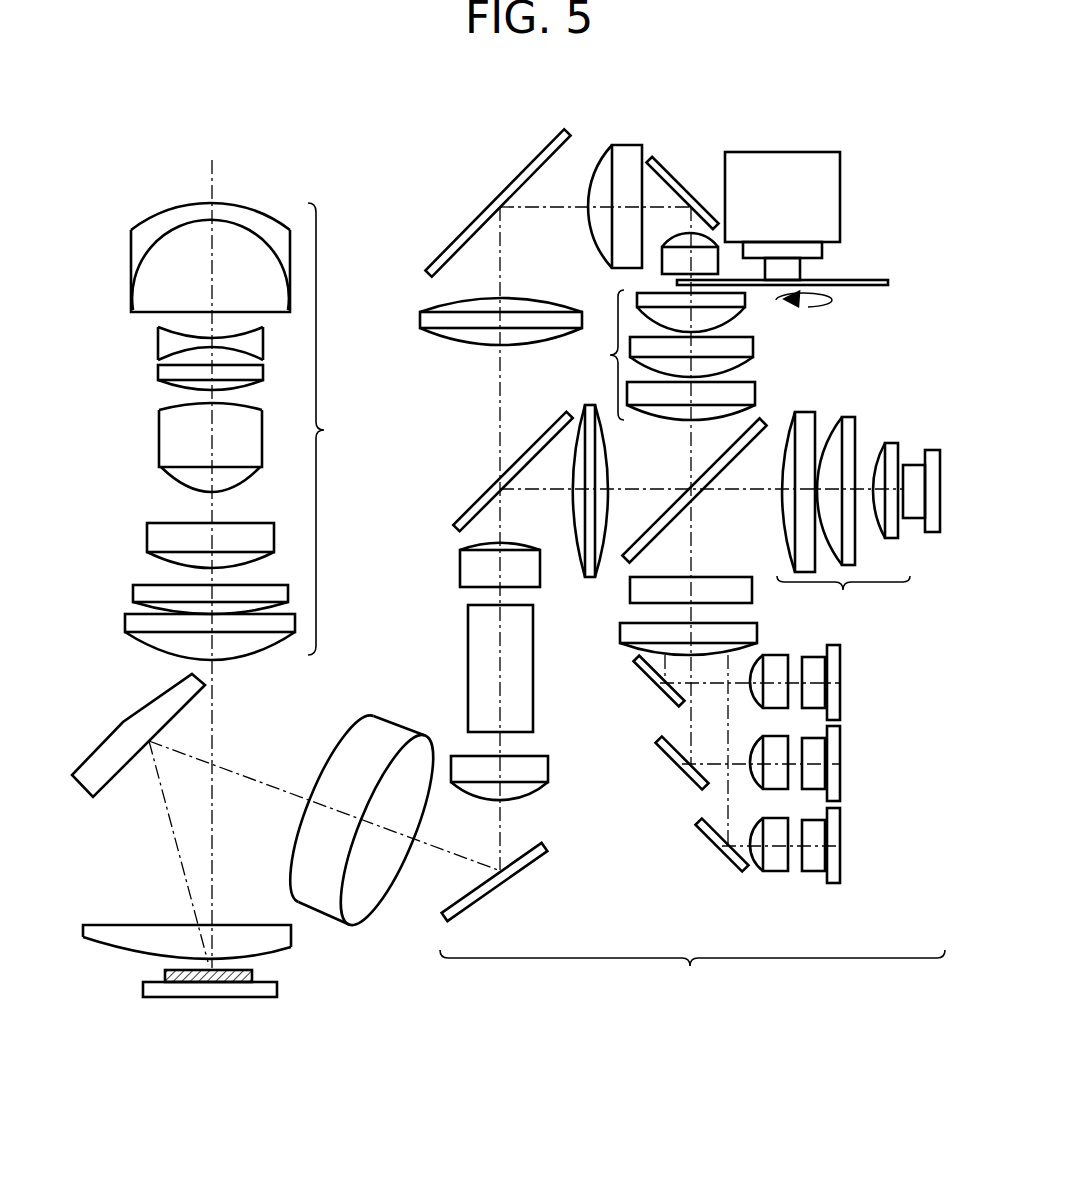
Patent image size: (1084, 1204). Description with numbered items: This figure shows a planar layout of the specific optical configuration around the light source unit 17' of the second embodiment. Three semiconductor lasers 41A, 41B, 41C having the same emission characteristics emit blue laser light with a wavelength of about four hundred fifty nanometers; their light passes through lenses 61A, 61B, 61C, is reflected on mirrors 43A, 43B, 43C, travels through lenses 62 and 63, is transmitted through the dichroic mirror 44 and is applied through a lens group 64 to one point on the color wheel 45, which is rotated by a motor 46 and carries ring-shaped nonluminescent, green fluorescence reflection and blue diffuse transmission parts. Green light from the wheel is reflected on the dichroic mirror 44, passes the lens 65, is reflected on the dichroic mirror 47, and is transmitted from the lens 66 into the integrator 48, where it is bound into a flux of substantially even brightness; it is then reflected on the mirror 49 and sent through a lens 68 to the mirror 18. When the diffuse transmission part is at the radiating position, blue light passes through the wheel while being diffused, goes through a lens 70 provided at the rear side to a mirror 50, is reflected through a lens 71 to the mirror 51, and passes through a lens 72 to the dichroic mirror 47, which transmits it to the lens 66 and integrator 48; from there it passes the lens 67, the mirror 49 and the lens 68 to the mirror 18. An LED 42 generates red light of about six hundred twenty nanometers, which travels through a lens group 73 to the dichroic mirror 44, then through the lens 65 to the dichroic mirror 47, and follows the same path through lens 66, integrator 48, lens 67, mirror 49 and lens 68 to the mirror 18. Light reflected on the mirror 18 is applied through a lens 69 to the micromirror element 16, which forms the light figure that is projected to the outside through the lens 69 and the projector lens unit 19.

The micromirror element 16 is at (187, 982).
The light source unit 17' is at (649, 543).
The mirror 18 is at (115, 750).
The projector lens unit 19 is at (240, 431).
The semiconductor laser 41A is at (842, 683).
The semiconductor laser 41B is at (840, 743).
The semiconductor laser 41C is at (840, 843).
The LED 42 is at (932, 450).
The mirror 43A is at (660, 687).
The mirror 43B is at (688, 778).
The mirror 43C is at (730, 858).
The dichroic mirror 44 is at (758, 420).
The color wheel 45 is at (860, 290).
The motor 46 is at (822, 197).
The dichroic mirror 47 is at (477, 505).
The integrator 48 is at (517, 692).
The mirror 49 is at (537, 858).
The mirror 50 is at (670, 173).
The mirror 51 is at (458, 243).
The lens 61A is at (777, 653).
The lens 61B is at (777, 778).
The lens 61C is at (777, 865).
The lens 62 is at (627, 633).
The lens 63 is at (722, 588).
The lens group 64 is at (665, 355).
The lens 65 is at (608, 458).
The lens 66 is at (473, 570).
The lens 67 is at (537, 768).
The lens 68 is at (392, 737).
The lens 69 is at (140, 933).
The lens 70 is at (673, 260).
The lens 71 is at (628, 157).
The lens 72 is at (422, 318).
The lens group 73 is at (843, 517).